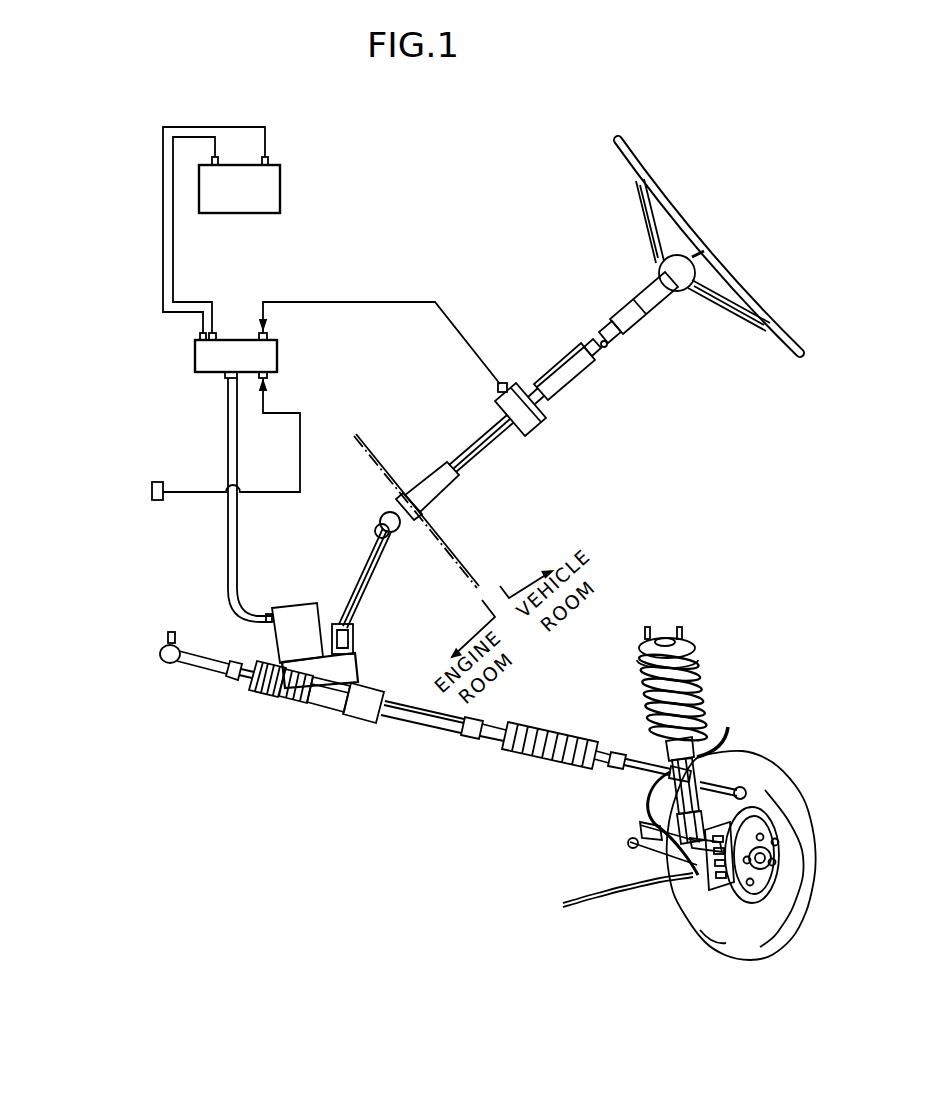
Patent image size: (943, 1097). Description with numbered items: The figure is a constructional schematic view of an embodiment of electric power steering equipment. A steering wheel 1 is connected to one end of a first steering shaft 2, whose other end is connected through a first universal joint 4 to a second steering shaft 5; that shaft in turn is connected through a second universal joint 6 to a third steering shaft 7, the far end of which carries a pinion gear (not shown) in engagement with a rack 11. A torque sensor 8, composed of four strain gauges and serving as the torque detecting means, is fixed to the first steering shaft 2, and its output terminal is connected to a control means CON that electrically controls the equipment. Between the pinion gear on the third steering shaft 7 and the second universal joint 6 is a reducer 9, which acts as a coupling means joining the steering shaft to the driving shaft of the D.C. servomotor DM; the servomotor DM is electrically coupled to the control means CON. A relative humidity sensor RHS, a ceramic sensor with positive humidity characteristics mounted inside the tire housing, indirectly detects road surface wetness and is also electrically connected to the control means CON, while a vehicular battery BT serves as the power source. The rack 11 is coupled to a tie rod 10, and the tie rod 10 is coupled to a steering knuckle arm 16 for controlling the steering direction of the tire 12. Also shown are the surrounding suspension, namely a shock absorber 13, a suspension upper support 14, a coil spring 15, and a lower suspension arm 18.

The steering wheel 1 is at (688, 203).
The first steering shaft 2 is at (601, 350).
The first universal joint 4 is at (382, 516).
The second steering shaft 5 is at (366, 565).
The second universal joint 6 is at (355, 640).
The third steering shaft 7 is at (338, 714).
The torque sensor 8 is at (537, 432).
The reducer 9 is at (262, 662).
The tie rod 10 is at (208, 678).
The rack 11 is at (308, 712).
The tire 12 is at (763, 940).
The shock absorber 13 is at (729, 737).
The suspension upper support 14 is at (693, 645).
The coil spring 15 is at (704, 685).
The steering knuckle arm 16 is at (778, 768).
The lower suspension arm 18 is at (637, 853).
The vehicular battery BT is at (280, 189).
The control means CON is at (202, 373).
The relative humidity sensor RHS is at (157, 500).
The D.C. servomotor DM is at (285, 610).